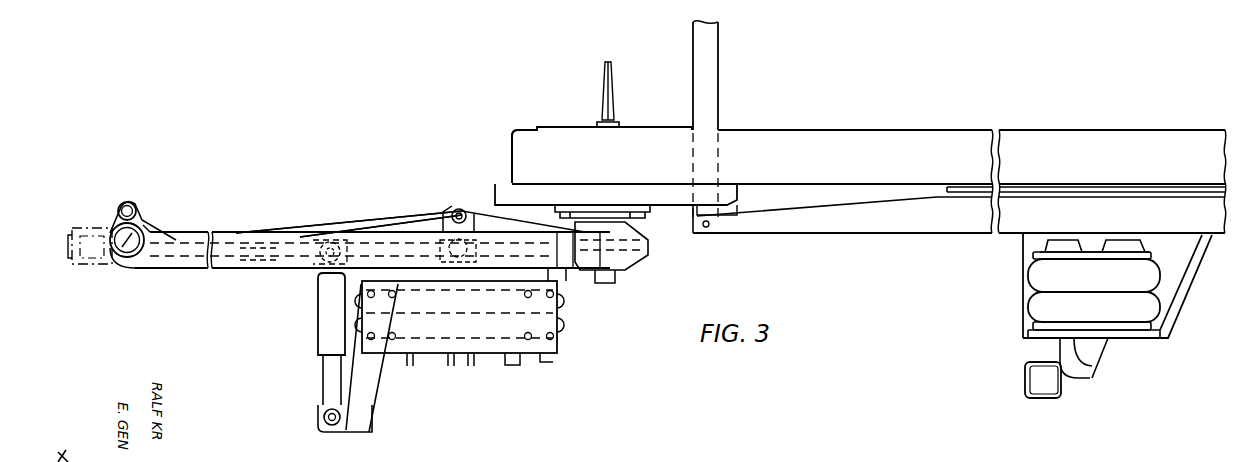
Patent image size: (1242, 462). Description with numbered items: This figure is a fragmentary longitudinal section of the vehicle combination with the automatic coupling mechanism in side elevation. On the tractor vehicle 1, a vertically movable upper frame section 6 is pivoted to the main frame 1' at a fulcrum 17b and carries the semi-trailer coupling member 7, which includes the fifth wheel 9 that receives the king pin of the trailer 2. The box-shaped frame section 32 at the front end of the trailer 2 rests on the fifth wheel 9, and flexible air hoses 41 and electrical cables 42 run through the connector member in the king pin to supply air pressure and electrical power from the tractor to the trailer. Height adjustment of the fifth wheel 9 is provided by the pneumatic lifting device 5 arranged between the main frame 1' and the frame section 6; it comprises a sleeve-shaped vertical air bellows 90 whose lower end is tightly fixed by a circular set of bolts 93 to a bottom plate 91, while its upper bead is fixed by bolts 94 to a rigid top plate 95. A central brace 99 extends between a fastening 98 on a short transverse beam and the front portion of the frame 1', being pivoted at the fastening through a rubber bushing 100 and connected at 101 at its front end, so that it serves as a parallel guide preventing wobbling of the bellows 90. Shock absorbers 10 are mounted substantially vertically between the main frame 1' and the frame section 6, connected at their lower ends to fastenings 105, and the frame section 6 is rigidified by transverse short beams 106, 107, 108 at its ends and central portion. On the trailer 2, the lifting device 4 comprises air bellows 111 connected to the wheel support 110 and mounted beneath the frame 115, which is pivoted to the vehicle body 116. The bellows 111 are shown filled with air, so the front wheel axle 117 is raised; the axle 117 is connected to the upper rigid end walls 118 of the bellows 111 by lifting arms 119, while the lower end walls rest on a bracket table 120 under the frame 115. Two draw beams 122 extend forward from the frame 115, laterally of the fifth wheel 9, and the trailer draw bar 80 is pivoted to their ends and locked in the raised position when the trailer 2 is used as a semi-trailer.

The vehicle 1 is at (136, 267).
The main frame 1' is at (374, 399).
The trailer 2 is at (841, 130).
The lifting device 4 is at (1026, 309).
The lifting device 5 is at (483, 356).
The upper frame section 6 is at (248, 252).
The semi-trailer coupling member 7 is at (640, 243).
The fifth wheel 9 is at (593, 193).
The shock absorbers 10 is at (318, 328).
The fulcrum 17b is at (146, 233).
The box-shaped frame section 32 is at (510, 133).
The flexible air hoses 41 is at (612, 76).
The flexible electrical cables 42 is at (614, 90).
The trailer draw bar 80 is at (718, 68).
The air bellows 90 is at (562, 305).
The bottom plate 91 is at (532, 353).
The bolts 93 is at (553, 346).
The bolts 94 is at (556, 276).
The top plate 95 is at (378, 240).
The fastening 98 is at (449, 217).
The central brace 99 is at (387, 238).
The rubber bushing 100 is at (462, 214).
The brace front connection 101 is at (131, 203).
The fastenings 105 is at (378, 403).
The transverse short beam 106 is at (158, 270).
The transverse short beam 107 is at (306, 270).
The transverse short beam 108 is at (517, 284).
The wheel support 110 is at (1195, 294).
The air bellows 111 is at (1033, 272).
The frame 115 is at (1013, 225).
The vehicle body 116 is at (1038, 192).
The front wheel axle 117 is at (1042, 382).
The upper rigid end walls 118 is at (1150, 250).
The lifting arms 119 is at (1087, 368).
The bracket table 120 is at (1150, 333).
The draw beams 122 is at (772, 217).